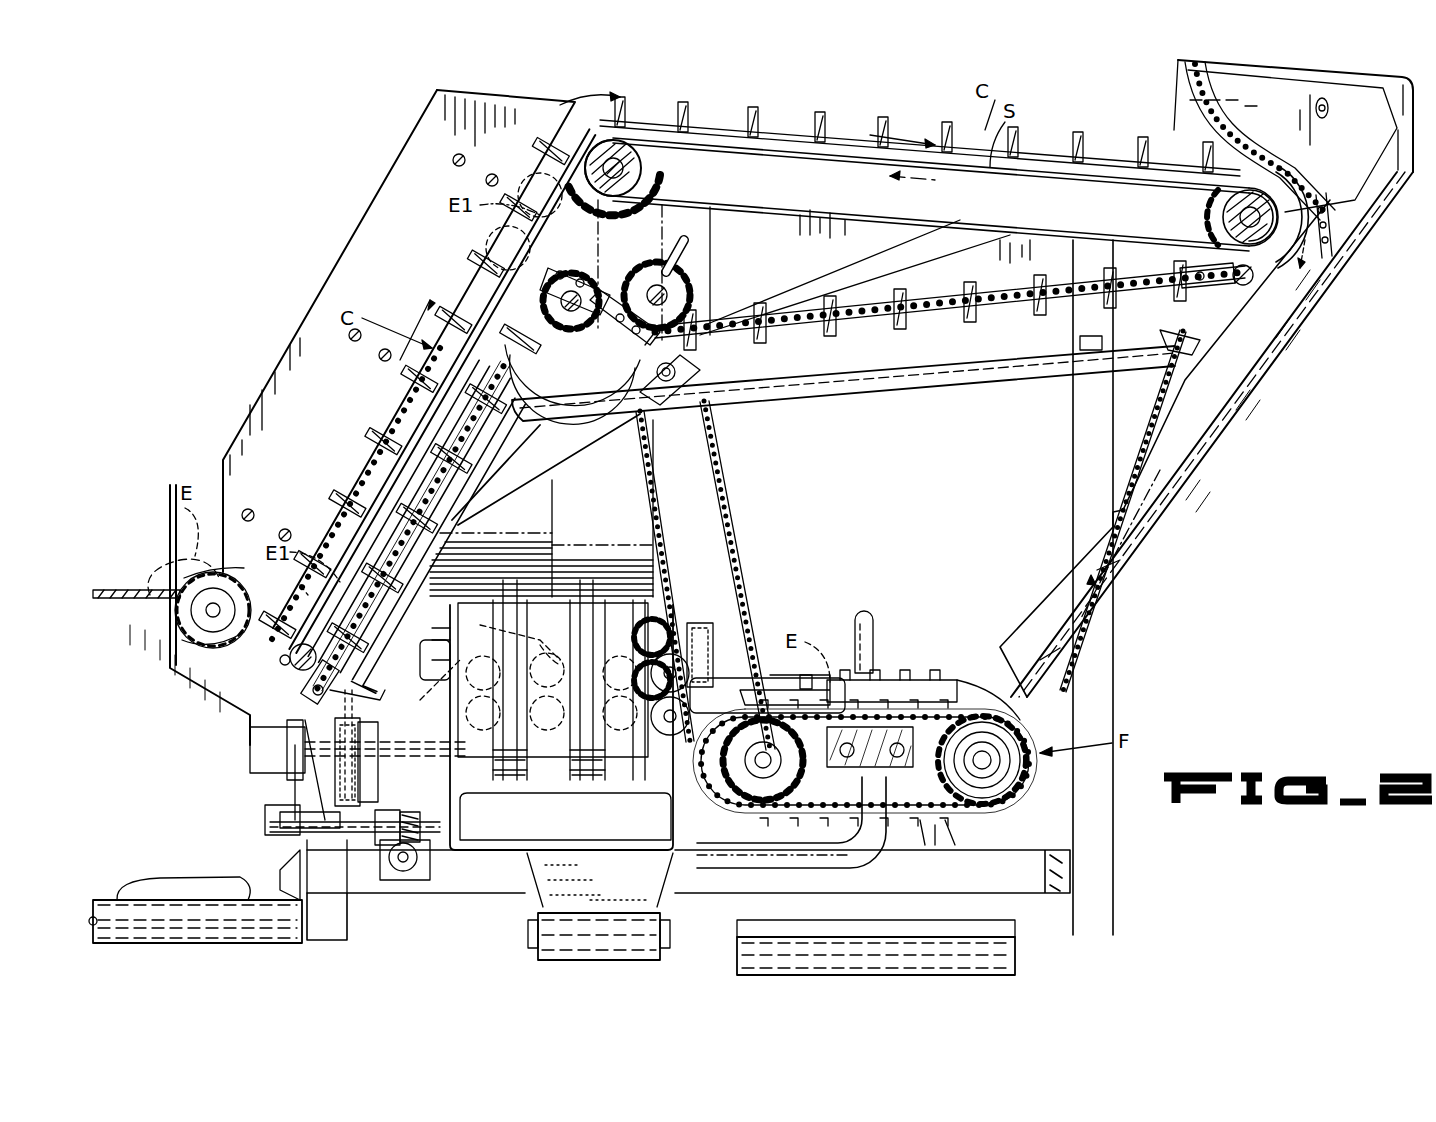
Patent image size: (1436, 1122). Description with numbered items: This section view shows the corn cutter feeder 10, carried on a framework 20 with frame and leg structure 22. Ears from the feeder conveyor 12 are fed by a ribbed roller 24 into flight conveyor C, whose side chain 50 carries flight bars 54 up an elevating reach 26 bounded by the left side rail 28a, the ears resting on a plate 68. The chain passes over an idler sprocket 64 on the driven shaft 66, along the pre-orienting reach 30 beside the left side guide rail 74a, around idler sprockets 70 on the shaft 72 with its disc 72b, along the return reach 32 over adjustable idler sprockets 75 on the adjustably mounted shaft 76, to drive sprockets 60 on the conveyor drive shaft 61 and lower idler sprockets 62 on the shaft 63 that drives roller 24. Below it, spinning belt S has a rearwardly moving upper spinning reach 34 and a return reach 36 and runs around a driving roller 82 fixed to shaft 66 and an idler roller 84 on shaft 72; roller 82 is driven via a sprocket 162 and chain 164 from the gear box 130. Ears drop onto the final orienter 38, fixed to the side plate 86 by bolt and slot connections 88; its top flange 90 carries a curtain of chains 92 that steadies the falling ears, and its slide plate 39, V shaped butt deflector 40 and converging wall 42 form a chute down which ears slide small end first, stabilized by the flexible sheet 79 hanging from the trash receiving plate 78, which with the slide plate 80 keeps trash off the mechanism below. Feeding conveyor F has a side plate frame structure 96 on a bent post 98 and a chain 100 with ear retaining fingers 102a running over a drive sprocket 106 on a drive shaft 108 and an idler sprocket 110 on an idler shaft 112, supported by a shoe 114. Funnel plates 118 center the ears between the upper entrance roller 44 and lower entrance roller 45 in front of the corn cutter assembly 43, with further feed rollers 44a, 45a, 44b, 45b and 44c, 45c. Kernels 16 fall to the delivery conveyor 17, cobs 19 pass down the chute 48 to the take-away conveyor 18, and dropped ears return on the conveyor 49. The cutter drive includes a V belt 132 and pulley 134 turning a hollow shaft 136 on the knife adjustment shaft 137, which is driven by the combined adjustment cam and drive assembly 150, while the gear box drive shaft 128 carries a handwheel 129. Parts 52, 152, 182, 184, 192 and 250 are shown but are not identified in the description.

The corn cutter feeder 10 is at (290, 162).
The feeder conveyor 12 is at (100, 588).
The kernels 16 is at (560, 885).
The delivery conveyor 17 is at (662, 912).
The take-away conveyor 18 is at (100, 898).
The cobs 19 is at (185, 880).
The framework 20 is at (1117, 636).
The frame and leg structure 22 is at (350, 918).
The ribbed roller 24 is at (190, 624).
The elevating reach 26 is at (467, 416).
The left side rail 28a is at (362, 243).
The pre-orienting reach 30 is at (780, 127).
The return reach 32 is at (1025, 288).
The upper spinning reach 34 is at (1035, 210).
The return reach 36 is at (900, 228).
The final orienter 38 is at (1308, 340).
The slide plate 39 is at (1275, 372).
The V shaped butt deflector 40 is at (1262, 330).
The converging wall 42 is at (1100, 598).
The corn cutter assembly 43 is at (560, 597).
The upper entrance roller 44 is at (566, 715).
The feed roller 44a is at (675, 625).
The feed roller 44b is at (509, 637).
The feed roller 44c is at (480, 675).
The lower entrance roller 45 is at (564, 720).
The feed roller 45a is at (637, 745).
The feed roller 45b is at (551, 745).
The feed roller 45c is at (491, 745).
The chute 48 is at (277, 865).
The conveyor 49 is at (947, 937).
The side chain 50 is at (872, 330).
The cleat 52 is at (367, 478).
The flight bars 54 is at (330, 550).
The drive sprockets 60 is at (563, 325).
The conveyor drive shaft 61 is at (590, 280).
The lower idler sprockets 62 is at (290, 660).
The shaft 63 is at (300, 682).
The idler sprocket 64 is at (660, 160).
The belt drive shaft 66 is at (662, 176).
The plate 68 is at (358, 489).
The idler sprockets 70 is at (1205, 217).
The idler shaft 72 is at (1255, 205).
The disc 72b is at (1243, 280).
The left side guide rail 74a is at (1038, 155).
The adjustable idler sprockets 75 is at (688, 264).
The adjustably mounted shaft 76 is at (690, 290).
The trash receiving plate 78 is at (954, 370).
The flexible sheet 79 is at (1160, 390).
The slide plate 80 is at (398, 423).
The driving roller 82 is at (613, 168).
The idler roller 84 is at (1275, 185).
The side plate 86 is at (1235, 85).
The bolt and slot connections 88 is at (1316, 104).
The top flange 90 is at (1374, 85).
The chains 92 is at (1340, 250).
The side plate frame structure 96 is at (885, 812).
The bent post 98 is at (862, 868).
The chain 100 is at (998, 800).
The ear retaining finger 102a is at (965, 830).
The drive sprocket 106 is at (770, 805).
The drive shaft 108 is at (755, 770).
The idler sprocket 110 is at (967, 691).
The idler shaft 112 is at (1005, 780).
The shoe 114 is at (872, 716).
The funnel plates 118 is at (735, 650).
The drive shaft 128 is at (378, 698).
The handwheel 129 is at (865, 615).
The gear box 130 is at (748, 673).
The V belt 132 is at (358, 790).
The pulley 134 is at (300, 790).
The hollow shaft 136 is at (380, 766).
The knife adjustment shaft 137 is at (302, 750).
The combined adjustment cam and drive assembly 150 is at (330, 727).
The pulley 152 is at (415, 870).
The sprocket 162 is at (715, 720).
The chain 164 is at (728, 446).
The brace 182 is at (470, 505).
The guide 184 is at (612, 383).
The roller shaft 192 is at (206, 611).
The shaft 250 is at (440, 827).